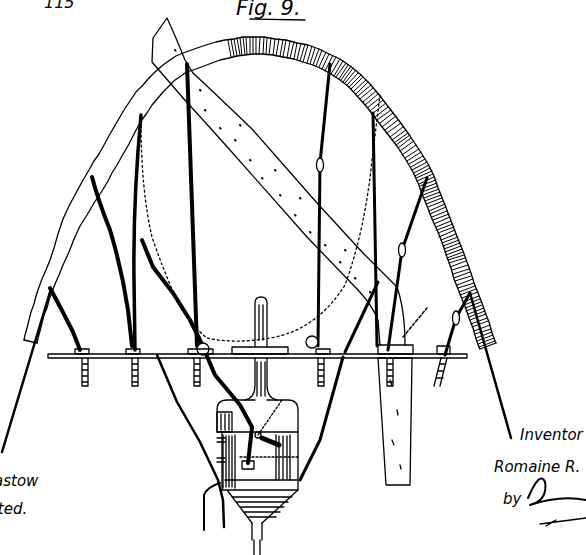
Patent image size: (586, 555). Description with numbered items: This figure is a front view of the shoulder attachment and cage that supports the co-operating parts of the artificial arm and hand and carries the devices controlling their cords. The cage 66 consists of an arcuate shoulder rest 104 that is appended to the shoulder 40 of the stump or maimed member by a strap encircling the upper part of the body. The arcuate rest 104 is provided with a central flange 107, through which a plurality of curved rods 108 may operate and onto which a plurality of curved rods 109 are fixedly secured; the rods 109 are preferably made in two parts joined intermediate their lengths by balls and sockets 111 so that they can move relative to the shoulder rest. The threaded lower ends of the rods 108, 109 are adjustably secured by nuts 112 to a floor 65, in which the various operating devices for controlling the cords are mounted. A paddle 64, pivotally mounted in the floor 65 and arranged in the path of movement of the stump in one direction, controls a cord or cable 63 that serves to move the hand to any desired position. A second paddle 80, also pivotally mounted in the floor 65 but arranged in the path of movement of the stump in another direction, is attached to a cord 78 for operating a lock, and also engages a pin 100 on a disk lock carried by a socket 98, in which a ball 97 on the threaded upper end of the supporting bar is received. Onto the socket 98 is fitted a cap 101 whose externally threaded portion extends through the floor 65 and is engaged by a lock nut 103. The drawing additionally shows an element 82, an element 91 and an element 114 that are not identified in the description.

The shoulder 40 is at (150, 224).
The cord or cable 63 is at (180, 513).
The paddle 64 is at (362, 318).
The floor 65 is at (112, 360).
The shoulder cage 66 is at (270, 193).
The cord 78 is at (212, 487).
The paddle 80 is at (177, 303).
The blade 82 is at (403, 452).
The plunger rod 91 is at (261, 297).
The ball 97 is at (277, 503).
The socket 98 is at (277, 482).
The pin 100 is at (270, 423).
The cap 101 is at (217, 418).
The lock nut 103 is at (273, 347).
The arcuate shoulder rest 104 is at (411, 133).
The central flange 107 is at (376, 84).
The curved rods 108 is at (192, 177).
The curved rods 109 is at (322, 182).
The balls and sockets 111 is at (324, 167).
The nuts 112 is at (127, 353).
The link 114 is at (426, 321).